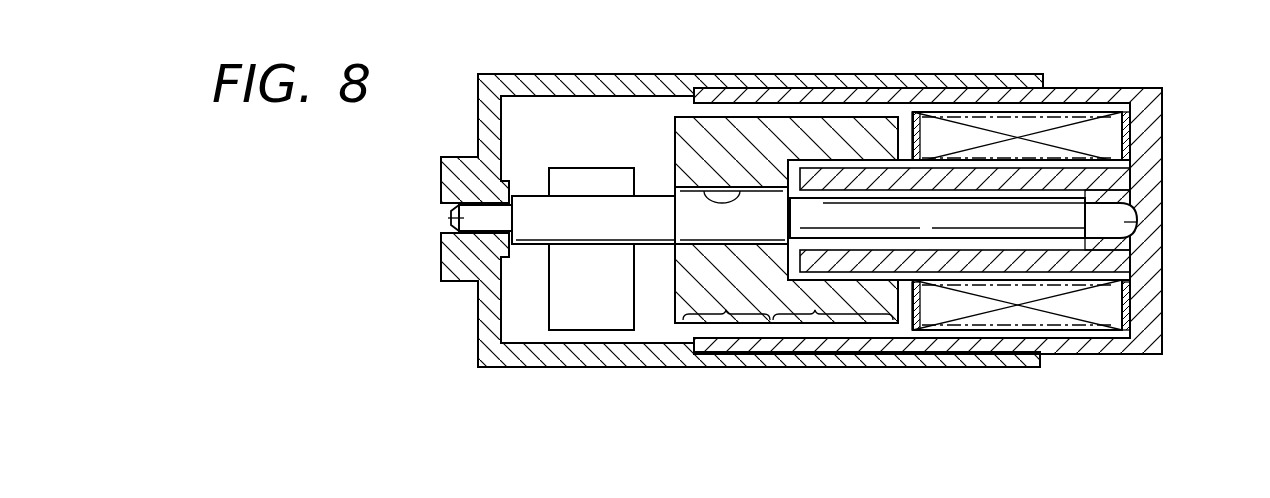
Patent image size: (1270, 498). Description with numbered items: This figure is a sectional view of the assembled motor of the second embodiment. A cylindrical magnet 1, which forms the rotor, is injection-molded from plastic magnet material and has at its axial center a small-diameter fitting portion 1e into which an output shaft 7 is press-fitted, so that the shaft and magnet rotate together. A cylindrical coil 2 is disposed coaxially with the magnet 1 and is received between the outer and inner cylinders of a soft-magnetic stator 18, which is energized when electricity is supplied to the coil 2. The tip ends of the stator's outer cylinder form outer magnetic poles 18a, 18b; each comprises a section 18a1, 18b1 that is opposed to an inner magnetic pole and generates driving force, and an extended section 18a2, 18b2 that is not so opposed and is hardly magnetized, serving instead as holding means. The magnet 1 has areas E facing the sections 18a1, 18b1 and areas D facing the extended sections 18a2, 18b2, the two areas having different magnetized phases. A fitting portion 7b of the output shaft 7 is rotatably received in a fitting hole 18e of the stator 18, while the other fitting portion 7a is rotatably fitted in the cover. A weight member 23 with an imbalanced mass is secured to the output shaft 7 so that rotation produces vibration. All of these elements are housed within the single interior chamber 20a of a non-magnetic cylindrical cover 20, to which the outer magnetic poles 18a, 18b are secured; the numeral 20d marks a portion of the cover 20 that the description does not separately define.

The cover 20 is at (476, 71).
The interior chamber 20a is at (950, 90).
The casing flange 20d is at (488, 192).
The stator 18 is at (1152, 82).
The outer magnetic pole 18a is at (836, 36).
The section of outer magnetic pole 18a1 is at (886, 70).
The extended section of outer magnetic pole 18a2 is at (765, 70).
The outer magnetic pole 18b is at (833, 404).
The section of outer magnetic pole 18b1 is at (884, 368).
The extended section of outer magnetic pole 18b2 is at (764, 368).
The fitting hole 18e is at (1142, 210).
The coil 2 is at (1047, 118).
The magnet 1 is at (681, 100).
The fitting portion 1e is at (720, 198).
The weight member 23 is at (597, 322).
The output shaft 7 is at (832, 2).
The fitting portion 7a is at (450, 219).
The fitting portion 7b is at (1140, 226).
The area D is at (726, 300).
The area E is at (833, 300).